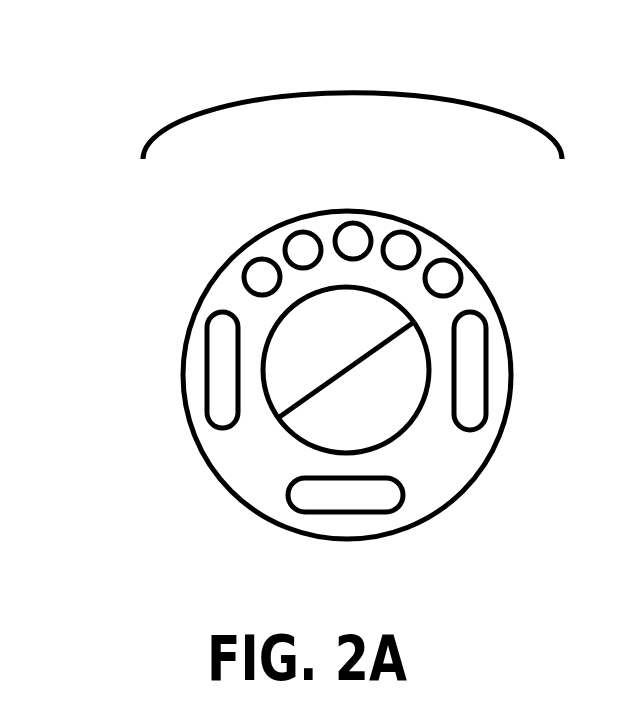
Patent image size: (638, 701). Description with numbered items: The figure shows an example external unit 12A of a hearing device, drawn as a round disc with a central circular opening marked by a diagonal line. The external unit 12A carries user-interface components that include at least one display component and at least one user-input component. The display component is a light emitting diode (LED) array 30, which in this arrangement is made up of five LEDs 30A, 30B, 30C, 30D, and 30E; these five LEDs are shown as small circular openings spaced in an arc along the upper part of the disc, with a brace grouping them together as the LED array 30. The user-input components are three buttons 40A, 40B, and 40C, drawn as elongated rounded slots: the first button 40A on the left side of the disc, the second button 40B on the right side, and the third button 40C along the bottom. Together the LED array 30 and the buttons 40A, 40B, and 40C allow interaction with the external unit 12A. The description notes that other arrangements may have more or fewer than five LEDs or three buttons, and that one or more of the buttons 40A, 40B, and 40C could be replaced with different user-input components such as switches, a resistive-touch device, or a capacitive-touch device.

The external unit 12A is at (100, 265).
The light emitting diode (LED) array 30 is at (352, 92).
The LED 30A is at (247, 263).
The LED 30B is at (291, 234).
The LED 30C is at (352, 222).
The LED 30D is at (413, 234).
The LED 30E is at (455, 263).
The button 40A is at (207, 375).
The button 40B is at (487, 374).
The button 40C is at (332, 512).